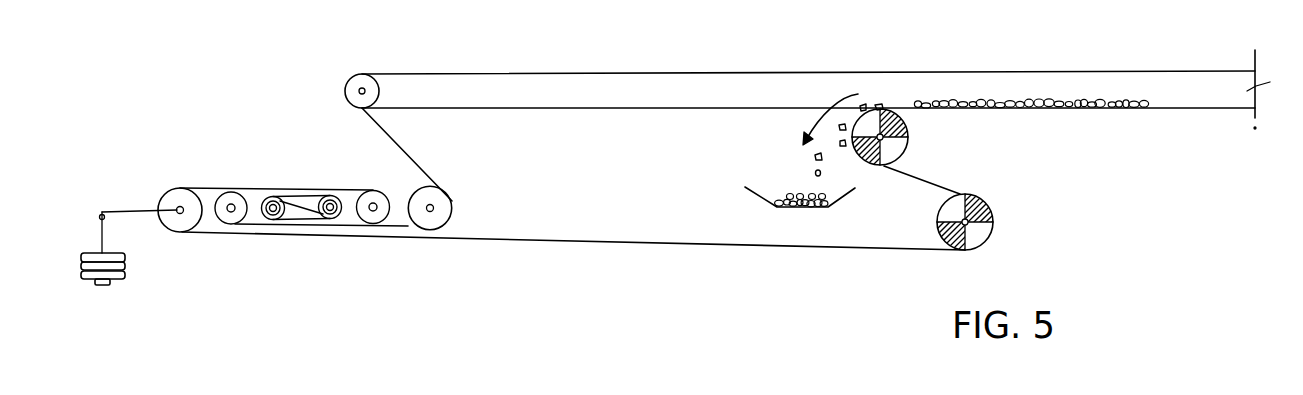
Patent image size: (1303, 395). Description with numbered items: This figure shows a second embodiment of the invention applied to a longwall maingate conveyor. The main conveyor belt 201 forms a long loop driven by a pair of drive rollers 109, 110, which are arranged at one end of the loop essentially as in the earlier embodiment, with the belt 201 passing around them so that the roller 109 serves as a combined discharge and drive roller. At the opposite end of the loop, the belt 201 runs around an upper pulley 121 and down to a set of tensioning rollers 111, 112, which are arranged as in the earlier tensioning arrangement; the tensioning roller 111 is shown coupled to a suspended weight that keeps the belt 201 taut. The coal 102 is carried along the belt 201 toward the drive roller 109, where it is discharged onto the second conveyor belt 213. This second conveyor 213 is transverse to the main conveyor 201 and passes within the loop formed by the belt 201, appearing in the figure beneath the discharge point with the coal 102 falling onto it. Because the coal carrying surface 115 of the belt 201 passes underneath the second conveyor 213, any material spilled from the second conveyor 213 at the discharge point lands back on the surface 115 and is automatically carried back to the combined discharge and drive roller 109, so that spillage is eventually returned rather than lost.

The conveyor belt 201 is at (788, 72).
The coal 102 is at (1070, 97).
The pulley 121 is at (372, 92).
The drive roller 109 is at (903, 153).
The drive roller 110 is at (982, 234).
The coal carrying surface 115 is at (532, 238).
The conveyor belt 213 is at (817, 166).
The tensioning roller 111 is at (187, 222).
The tensioning roller 112 is at (428, 221).